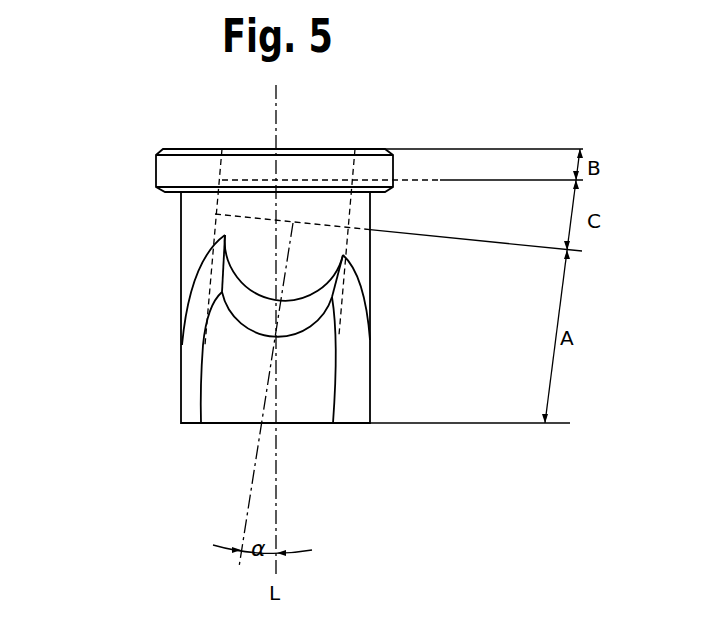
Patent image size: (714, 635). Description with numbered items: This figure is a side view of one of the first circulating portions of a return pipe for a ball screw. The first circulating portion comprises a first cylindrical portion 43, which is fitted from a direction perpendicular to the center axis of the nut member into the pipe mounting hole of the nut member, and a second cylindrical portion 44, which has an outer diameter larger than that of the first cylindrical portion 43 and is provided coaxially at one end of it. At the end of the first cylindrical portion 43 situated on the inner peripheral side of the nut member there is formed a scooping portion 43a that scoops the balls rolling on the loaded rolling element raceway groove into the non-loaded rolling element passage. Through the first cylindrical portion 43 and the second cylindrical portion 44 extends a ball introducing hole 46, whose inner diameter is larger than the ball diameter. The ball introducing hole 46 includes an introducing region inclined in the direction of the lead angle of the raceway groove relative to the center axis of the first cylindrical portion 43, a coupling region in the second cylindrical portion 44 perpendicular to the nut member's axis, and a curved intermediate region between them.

The second cylindrical portion 44 is at (170, 173).
The first cylindrical portion 43 is at (192, 247).
The scooping portion 43a is at (193, 380).
The ball introducing hole 46 is at (213, 316).